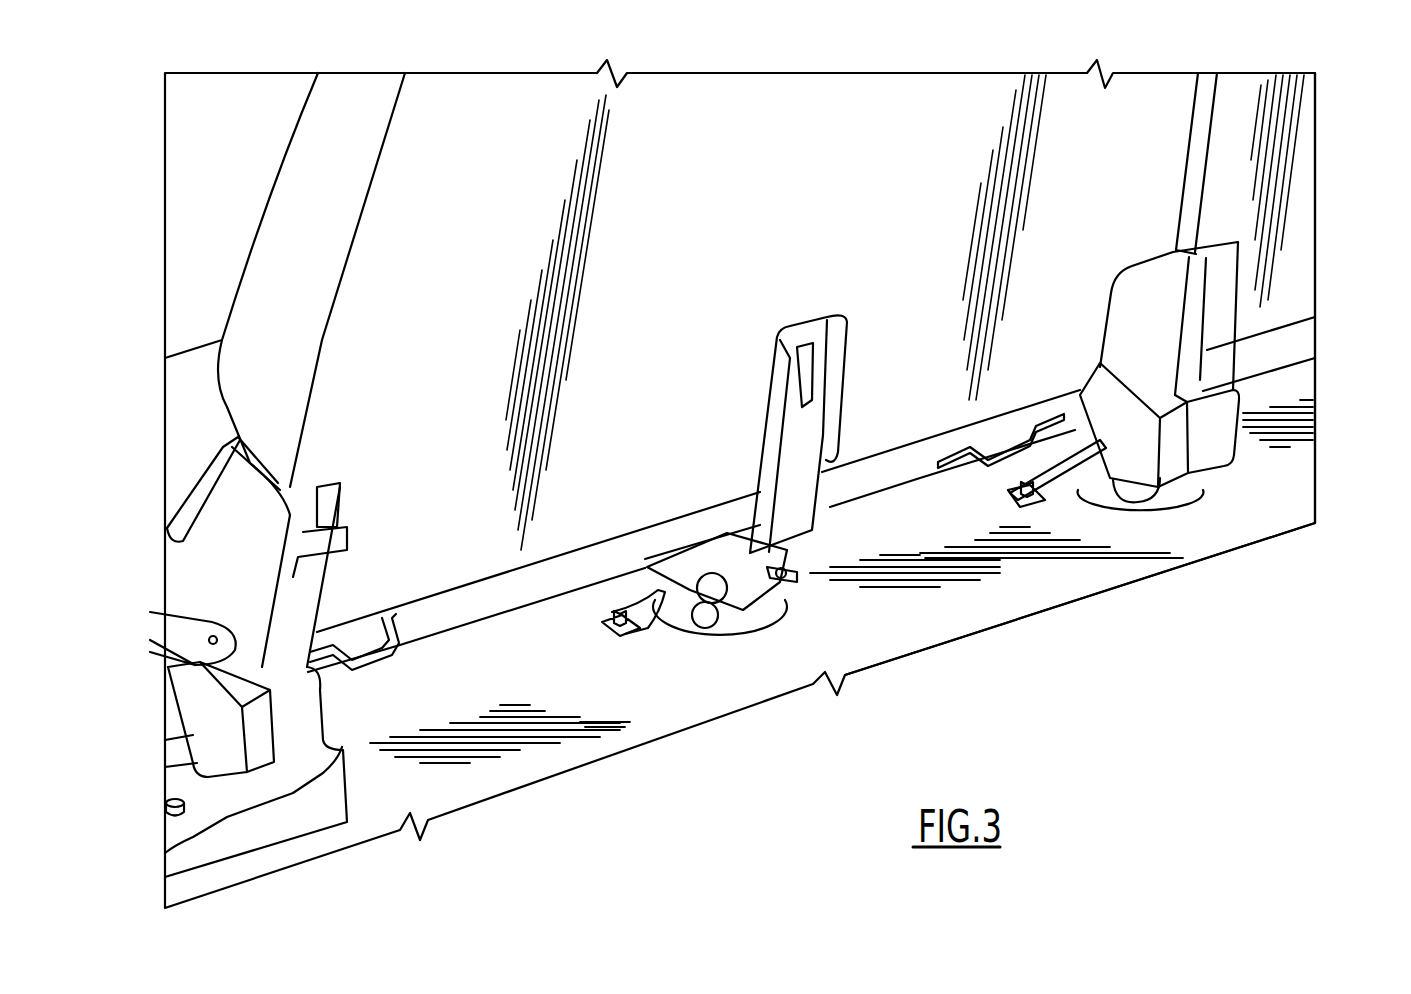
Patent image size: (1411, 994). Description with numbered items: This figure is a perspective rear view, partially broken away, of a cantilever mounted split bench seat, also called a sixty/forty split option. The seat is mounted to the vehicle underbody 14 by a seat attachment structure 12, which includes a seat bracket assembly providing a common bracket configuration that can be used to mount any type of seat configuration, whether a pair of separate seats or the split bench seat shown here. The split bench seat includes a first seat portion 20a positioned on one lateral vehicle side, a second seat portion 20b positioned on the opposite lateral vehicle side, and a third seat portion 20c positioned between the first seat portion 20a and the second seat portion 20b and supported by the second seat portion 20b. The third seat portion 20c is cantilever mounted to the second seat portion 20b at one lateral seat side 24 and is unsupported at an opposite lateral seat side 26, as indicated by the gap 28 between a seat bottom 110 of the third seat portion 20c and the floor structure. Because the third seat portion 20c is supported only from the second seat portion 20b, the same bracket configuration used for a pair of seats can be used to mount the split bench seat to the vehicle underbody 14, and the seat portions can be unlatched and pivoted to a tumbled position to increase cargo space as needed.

The seat attachment structure 12 is at (632, 638).
The vehicle underbody 14 is at (1025, 588).
The first seat portion 20a is at (1290, 228).
The second seat portion 20b is at (476, 97).
The third seat portion 20c is at (867, 433).
The one lateral seat side 24 is at (830, 437).
The opposite lateral seat side 26 is at (1155, 180).
The gap 28 is at (1000, 480).
The seat bottom 110 is at (917, 457).